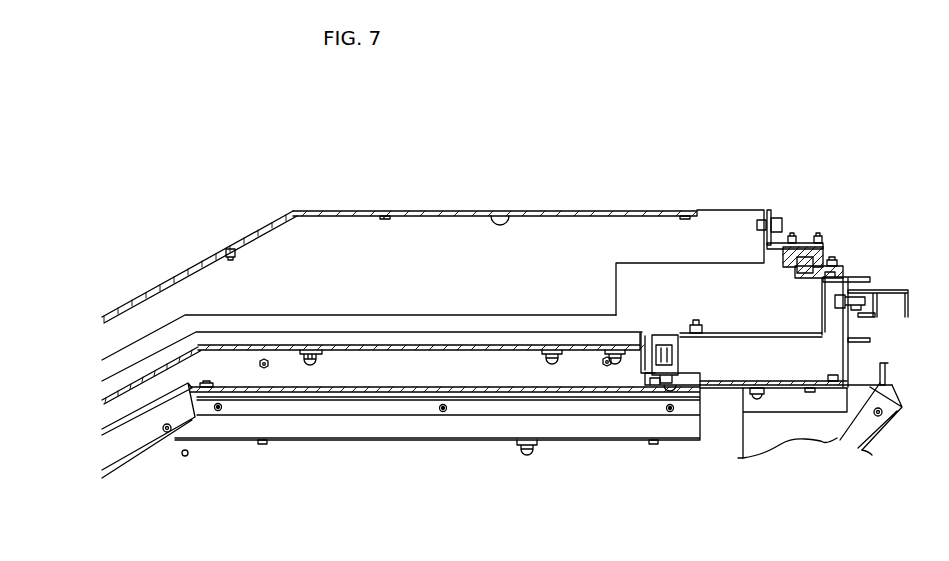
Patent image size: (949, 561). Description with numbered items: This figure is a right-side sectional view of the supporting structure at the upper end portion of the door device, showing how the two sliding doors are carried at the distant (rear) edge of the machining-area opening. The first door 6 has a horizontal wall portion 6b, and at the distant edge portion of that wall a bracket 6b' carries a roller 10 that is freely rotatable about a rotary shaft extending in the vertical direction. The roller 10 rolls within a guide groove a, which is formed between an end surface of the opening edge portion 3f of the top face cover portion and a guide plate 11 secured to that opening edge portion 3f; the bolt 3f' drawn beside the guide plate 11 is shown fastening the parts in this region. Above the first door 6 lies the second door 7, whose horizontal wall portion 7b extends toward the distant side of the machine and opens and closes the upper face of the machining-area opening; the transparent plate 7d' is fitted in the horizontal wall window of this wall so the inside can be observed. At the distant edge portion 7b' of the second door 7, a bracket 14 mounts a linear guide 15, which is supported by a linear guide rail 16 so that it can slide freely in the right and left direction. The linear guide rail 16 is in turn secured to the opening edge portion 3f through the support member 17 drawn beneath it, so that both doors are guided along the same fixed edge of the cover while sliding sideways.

The second door 7 is at (307, 206).
The horizontal wall portion 7b is at (495, 186).
The transparent plate 7d' is at (518, 198).
The distant edge portion 7b' is at (699, 241).
The bracket 14 is at (780, 235).
The linear guide 15 is at (825, 250).
The linear guide rail 16 is at (790, 267).
The support member 17 is at (811, 278).
The opening edge portion 3f is at (832, 364).
The frame bracket bolt 3f' is at (690, 310).
The roller 10 is at (720, 330).
The guide plate 11 is at (643, 333).
The guide groove a is at (665, 335).
The first door 6 is at (348, 331).
The horizontal wall portion 6b is at (401, 378).
The bracket 6b' is at (655, 424).